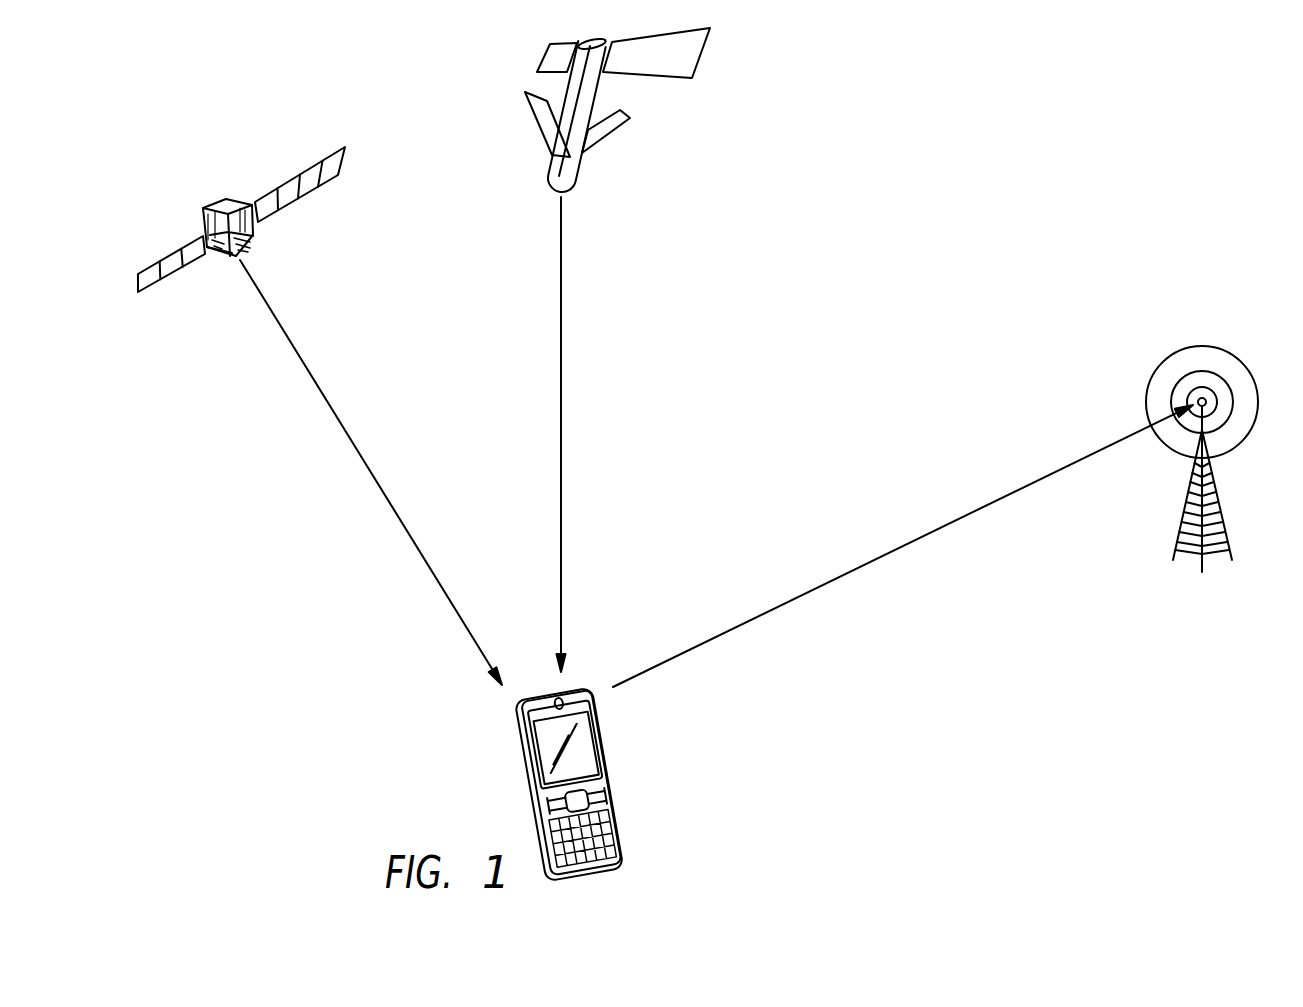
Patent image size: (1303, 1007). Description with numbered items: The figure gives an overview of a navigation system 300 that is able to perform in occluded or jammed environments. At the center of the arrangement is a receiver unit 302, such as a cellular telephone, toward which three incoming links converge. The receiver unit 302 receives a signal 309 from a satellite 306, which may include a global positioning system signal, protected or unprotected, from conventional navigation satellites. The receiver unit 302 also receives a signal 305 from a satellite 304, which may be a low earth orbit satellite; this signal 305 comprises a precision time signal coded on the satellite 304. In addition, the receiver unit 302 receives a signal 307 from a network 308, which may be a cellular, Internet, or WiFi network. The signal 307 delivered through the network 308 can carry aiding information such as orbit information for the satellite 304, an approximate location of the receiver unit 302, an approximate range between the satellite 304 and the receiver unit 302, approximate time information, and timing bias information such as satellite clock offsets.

The navigation system 300 is at (1018, 193).
The receiver unit 302 is at (518, 742).
The satellite 304 is at (705, 55).
The signal 305 is at (562, 417).
The satellite 306 is at (347, 158).
The signal 307 is at (897, 548).
The network 308 is at (1222, 503).
The signal 309 is at (362, 458).